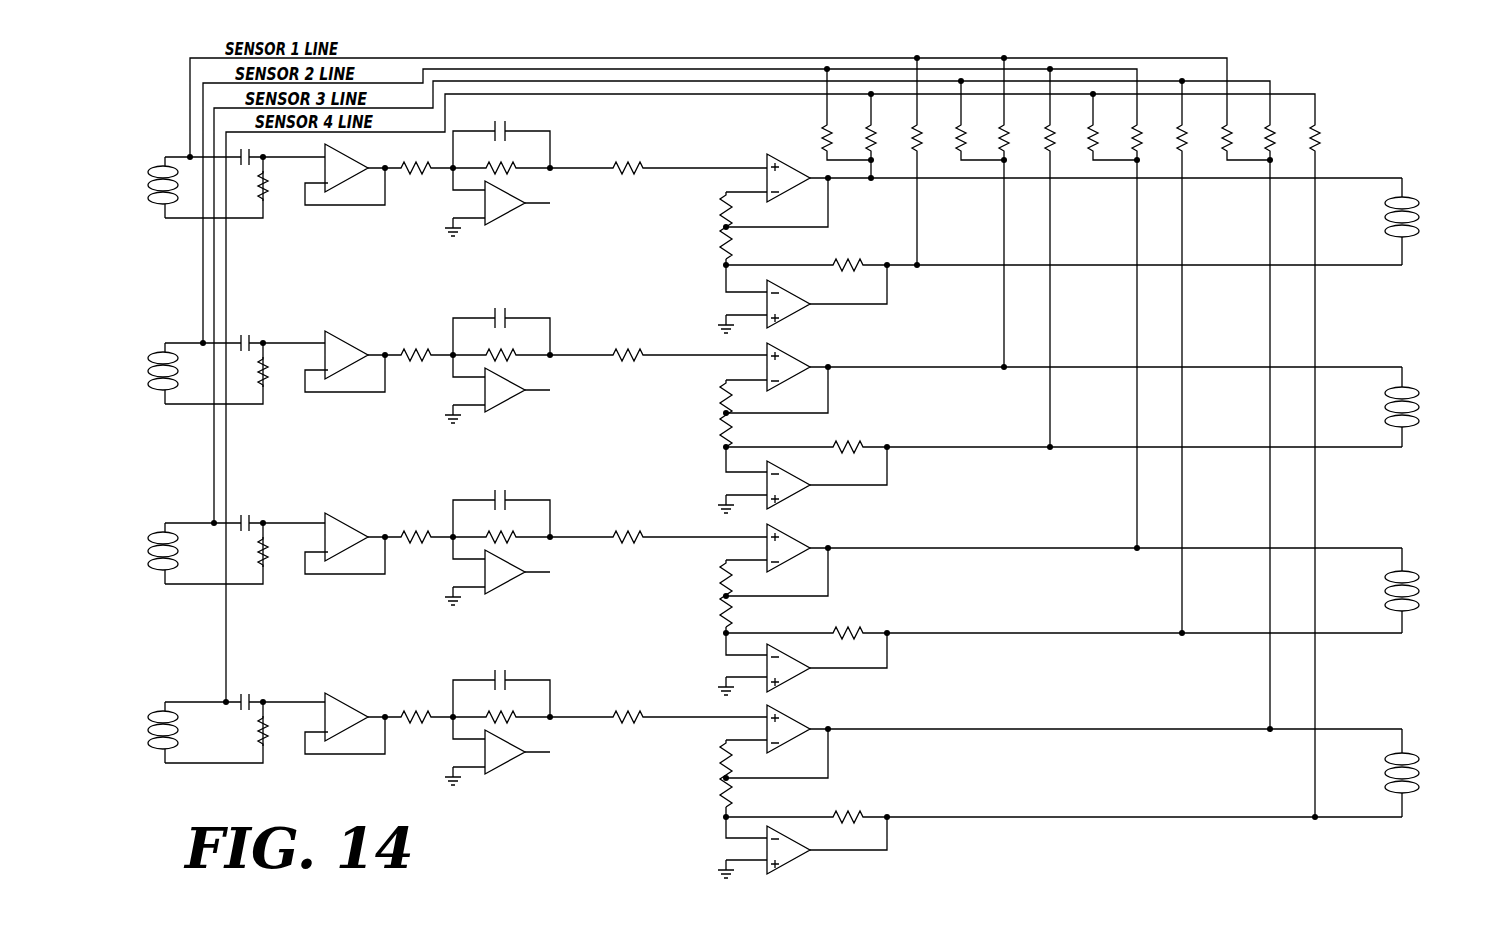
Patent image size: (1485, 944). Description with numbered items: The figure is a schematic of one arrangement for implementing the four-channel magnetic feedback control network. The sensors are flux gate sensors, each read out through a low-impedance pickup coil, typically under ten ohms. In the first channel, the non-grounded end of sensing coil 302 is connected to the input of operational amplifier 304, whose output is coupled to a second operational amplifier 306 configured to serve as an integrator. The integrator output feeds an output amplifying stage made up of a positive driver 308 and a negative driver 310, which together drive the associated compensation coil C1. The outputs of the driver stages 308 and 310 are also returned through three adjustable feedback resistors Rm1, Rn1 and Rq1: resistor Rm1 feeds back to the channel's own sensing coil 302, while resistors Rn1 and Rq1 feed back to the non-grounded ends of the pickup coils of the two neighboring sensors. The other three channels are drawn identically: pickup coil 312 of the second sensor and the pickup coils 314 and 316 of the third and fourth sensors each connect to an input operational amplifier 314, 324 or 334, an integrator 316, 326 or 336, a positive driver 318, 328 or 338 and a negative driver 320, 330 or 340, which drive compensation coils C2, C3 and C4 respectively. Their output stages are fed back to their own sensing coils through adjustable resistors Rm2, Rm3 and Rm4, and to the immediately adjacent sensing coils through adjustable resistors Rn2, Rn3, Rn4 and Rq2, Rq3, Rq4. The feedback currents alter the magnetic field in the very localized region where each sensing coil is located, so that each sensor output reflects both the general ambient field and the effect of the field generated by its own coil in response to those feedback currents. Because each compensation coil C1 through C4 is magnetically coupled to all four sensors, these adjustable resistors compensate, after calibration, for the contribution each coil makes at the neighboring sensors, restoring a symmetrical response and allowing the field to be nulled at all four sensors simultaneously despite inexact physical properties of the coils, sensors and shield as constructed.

The sensing coil 302 is at (150, 175).
The operational amplifier 304 is at (342, 158).
The second operational amplifier 306 is at (503, 212).
The positive driver 308 is at (790, 188).
The negative driver 310 is at (790, 296).
The sensor pickup coil 312 is at (150, 361).
The amplifier / third sensor coil 314 is at (342, 345).
The inverting amplifier / fourth sensor coil 316 is at (503, 399).
The operational amplifier 318 is at (784, 357).
The operational amplifier 320 is at (790, 480).
The amplifier 324 is at (342, 527).
The inverting amplifier 326 is at (503, 581).
The operational amplifier 328 is at (785, 537).
The operational amplifier 330 is at (790, 662).
The amplifier 334 is at (342, 707).
The inverting amplifier 336 is at (503, 761).
The operational amplifier 338 is at (785, 720).
The operational amplifier 340 is at (793, 858).
The adjustable feedback resistor Rn1 is at (843, 136).
The adjustable feedback resistor Rq1 is at (893, 141).
The adjustable feedback resistor Rm1 is at (934, 136).
The adjustable feedback resistor Rq2 is at (983, 137).
The adjustable feedback resistor Rn2 is at (1022, 136).
The adjustable feedback resistor Rm2 is at (1073, 137).
The adjustable feedback resistor Rn3 is at (1108, 136).
The adjustable feedback resistor Rq3 is at (1158, 137).
The adjustable feedback resistor Rm3 is at (1198, 136).
The resistor Rq4 is at (1247, 137).
The resistor Rn4 is at (1287, 136).
The adjustable feedback resistor Rm4 is at (1337, 137).
The compensation coil C1 is at (1417, 221).
The compensation coil C2 is at (1417, 407).
The compensation coil C3 is at (1417, 590).
The compensation coil C4 is at (1417, 773).